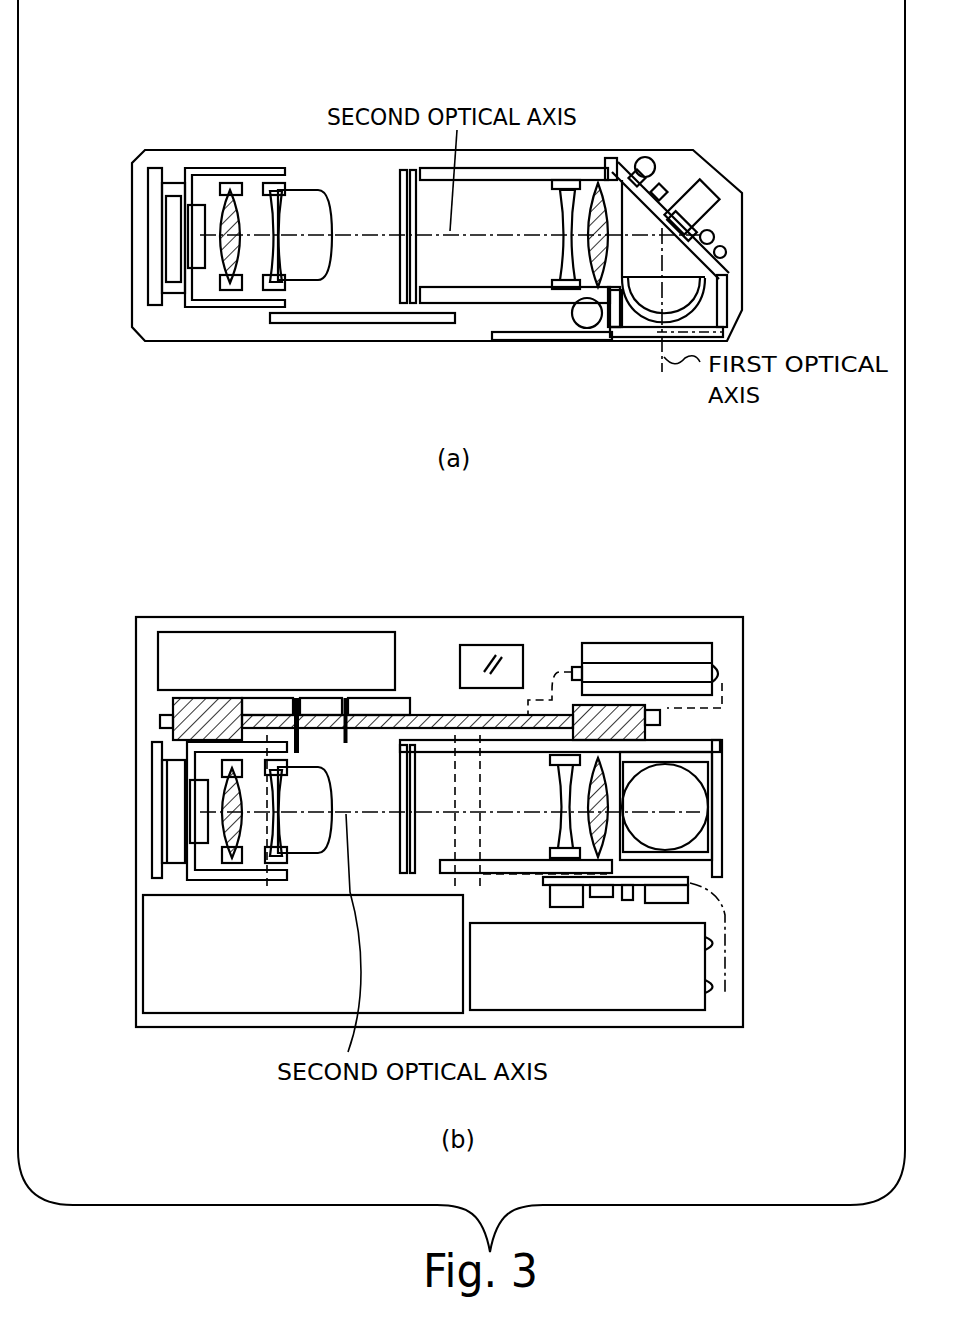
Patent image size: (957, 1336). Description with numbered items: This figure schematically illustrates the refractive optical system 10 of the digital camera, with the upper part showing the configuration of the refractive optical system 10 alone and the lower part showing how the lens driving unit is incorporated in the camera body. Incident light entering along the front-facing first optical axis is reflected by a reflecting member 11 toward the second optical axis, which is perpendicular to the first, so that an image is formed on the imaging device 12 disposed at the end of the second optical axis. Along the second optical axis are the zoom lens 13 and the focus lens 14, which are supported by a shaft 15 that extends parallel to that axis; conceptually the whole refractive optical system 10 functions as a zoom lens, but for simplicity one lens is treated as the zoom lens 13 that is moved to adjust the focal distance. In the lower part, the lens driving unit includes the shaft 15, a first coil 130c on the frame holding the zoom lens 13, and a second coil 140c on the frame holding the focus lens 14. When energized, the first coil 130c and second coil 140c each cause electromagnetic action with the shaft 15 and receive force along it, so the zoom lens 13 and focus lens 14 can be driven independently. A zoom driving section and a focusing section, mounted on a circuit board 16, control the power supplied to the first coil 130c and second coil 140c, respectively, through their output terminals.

The refractive optical system 10 is at (601, 126).
The reflecting member 11 is at (682, 267).
The imaging device 12 is at (200, 265).
The zoom lens 13 is at (575, 333).
The focus lens 14 is at (230, 285).
The shaft 15 is at (436, 716).
The circuit board 16 is at (692, 884).
The first coil 130c is at (617, 722).
The second coil 140c is at (206, 716).